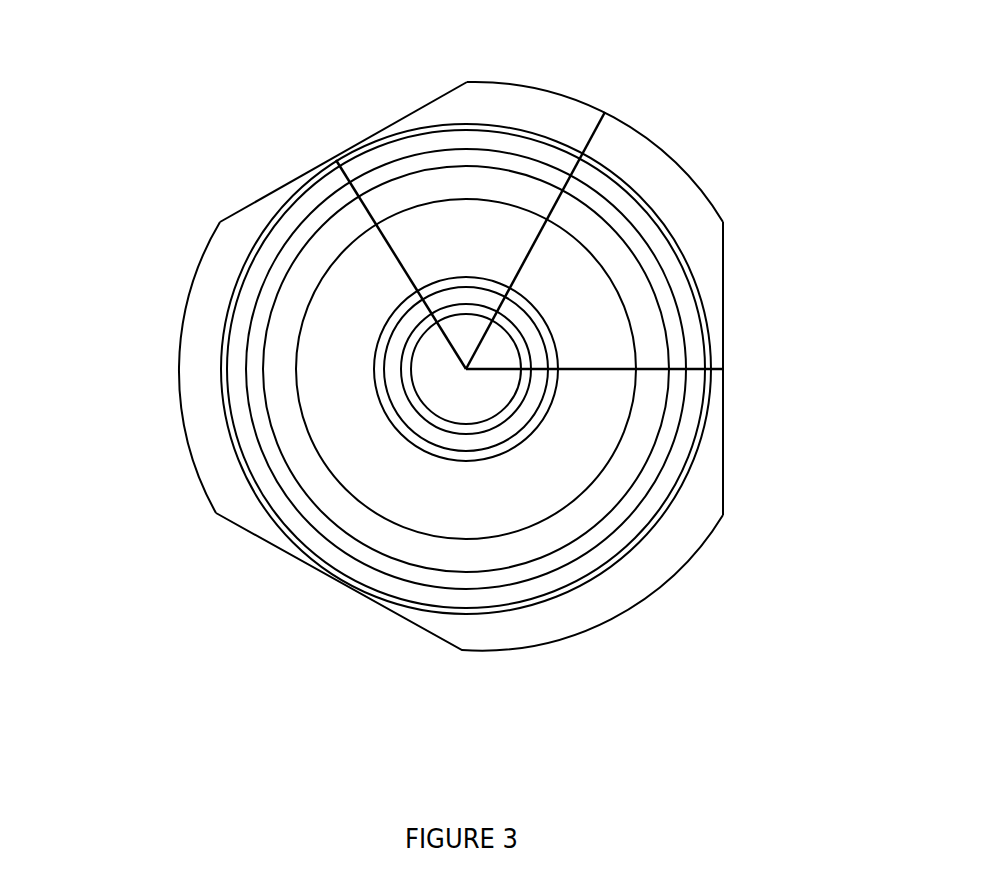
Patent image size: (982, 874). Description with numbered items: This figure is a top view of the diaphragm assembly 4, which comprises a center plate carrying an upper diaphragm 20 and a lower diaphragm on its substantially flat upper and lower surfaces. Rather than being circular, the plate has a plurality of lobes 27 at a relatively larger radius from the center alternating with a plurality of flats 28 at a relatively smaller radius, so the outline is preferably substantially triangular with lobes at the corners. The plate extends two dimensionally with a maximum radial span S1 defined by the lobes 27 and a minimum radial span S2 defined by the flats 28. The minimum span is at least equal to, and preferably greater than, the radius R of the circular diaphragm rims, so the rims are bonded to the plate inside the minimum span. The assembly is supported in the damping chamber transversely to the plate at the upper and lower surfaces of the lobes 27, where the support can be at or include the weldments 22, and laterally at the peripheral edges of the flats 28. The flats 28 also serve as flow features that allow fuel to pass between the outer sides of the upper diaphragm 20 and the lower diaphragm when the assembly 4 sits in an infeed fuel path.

The diaphragm assembly 4 is at (465, 332).
The upper diaphragm 20 is at (622, 242).
The weldment 22 is at (707, 293).
The lobe 27 is at (185, 333).
The flat 28 is at (730, 408).
The radius of the diaphragm rims R is at (703, 363).
The maximum radial span S1 is at (593, 127).
The minimum radial span S2 is at (337, 163).